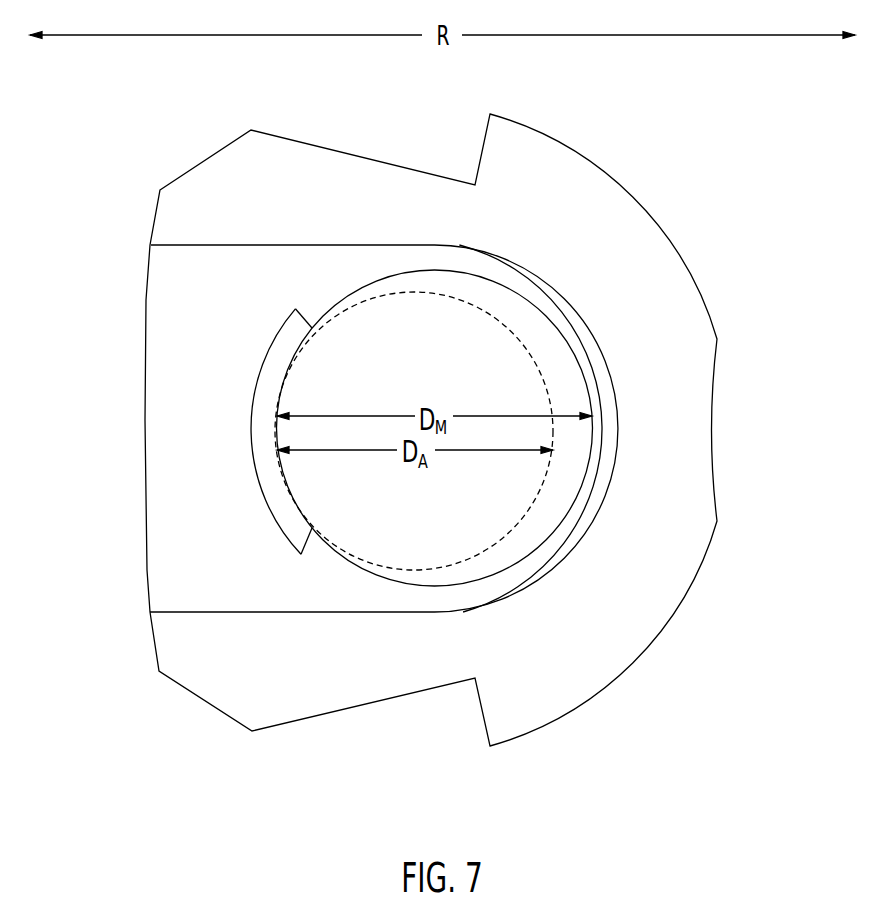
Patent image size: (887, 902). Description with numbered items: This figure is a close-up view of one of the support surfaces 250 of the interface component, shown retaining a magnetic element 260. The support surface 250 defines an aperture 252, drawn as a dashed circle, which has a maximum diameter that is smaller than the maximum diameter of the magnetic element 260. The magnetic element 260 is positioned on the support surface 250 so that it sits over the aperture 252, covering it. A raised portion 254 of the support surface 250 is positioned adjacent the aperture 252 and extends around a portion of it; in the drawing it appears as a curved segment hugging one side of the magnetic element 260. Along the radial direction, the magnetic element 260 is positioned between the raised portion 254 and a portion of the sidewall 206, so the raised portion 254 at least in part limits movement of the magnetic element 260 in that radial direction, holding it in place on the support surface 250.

The sidewall 206 is at (598, 730).
The support surface 250 is at (223, 295).
The aperture 252 is at (596, 561).
The raised portion 254 is at (237, 537).
The magnetic element 260 is at (423, 269).